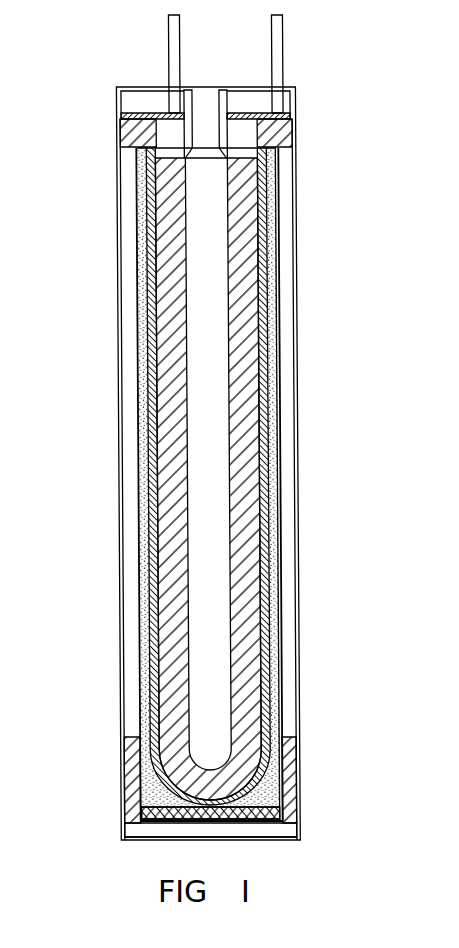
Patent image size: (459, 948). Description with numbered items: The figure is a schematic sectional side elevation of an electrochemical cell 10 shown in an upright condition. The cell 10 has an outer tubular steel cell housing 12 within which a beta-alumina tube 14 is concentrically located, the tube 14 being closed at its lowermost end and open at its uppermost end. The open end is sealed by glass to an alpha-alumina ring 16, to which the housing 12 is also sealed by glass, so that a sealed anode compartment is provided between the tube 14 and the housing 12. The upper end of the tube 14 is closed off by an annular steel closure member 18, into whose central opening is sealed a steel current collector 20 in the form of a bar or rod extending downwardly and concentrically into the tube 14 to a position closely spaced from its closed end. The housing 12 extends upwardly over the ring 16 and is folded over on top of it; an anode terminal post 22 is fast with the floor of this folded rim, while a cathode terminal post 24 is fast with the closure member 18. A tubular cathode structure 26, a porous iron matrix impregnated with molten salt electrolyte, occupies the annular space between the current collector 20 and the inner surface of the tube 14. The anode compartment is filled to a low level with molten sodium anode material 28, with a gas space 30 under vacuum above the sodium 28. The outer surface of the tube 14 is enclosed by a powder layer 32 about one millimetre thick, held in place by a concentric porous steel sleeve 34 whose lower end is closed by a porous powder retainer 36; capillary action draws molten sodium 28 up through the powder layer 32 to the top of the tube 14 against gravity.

The cell 10 is at (82, 52).
The cell housing 12 is at (295, 318).
The beta-alumina tube 14 is at (263, 392).
The alpha-alumina ring 16 is at (292, 130).
The closure member 18 is at (243, 110).
The current collector 20 is at (143, 100).
The anode terminal post 22 is at (277, 30).
The cathode terminal post 24 is at (172, 55).
The cathode structure 26 is at (250, 420).
The sodium anode material 28 is at (290, 762).
The gas space 30 is at (287, 475).
The powder layer 32 is at (140, 433).
The porous steel sleeve 34 is at (282, 442).
The powder retainer 36 is at (252, 813).